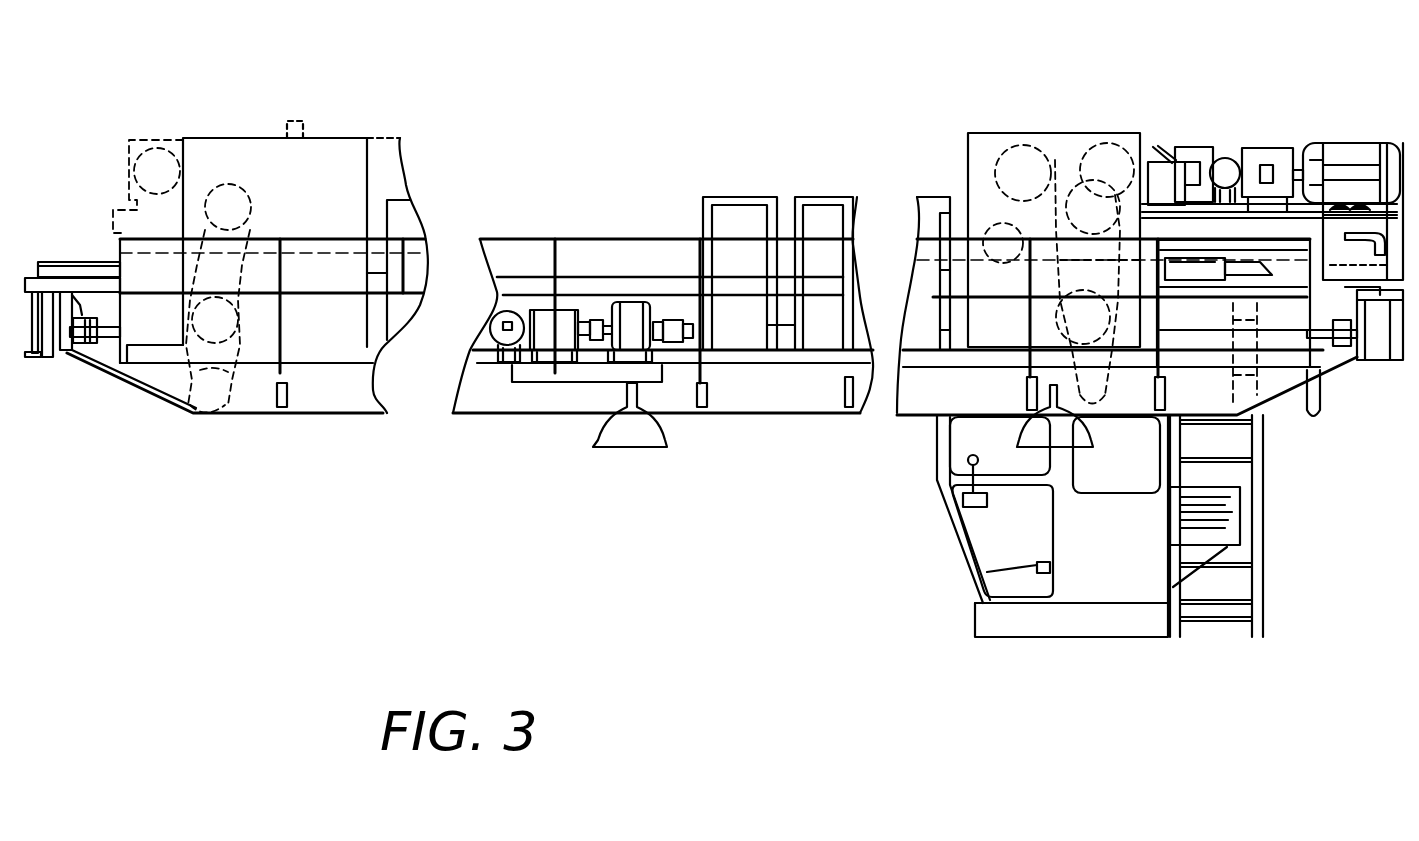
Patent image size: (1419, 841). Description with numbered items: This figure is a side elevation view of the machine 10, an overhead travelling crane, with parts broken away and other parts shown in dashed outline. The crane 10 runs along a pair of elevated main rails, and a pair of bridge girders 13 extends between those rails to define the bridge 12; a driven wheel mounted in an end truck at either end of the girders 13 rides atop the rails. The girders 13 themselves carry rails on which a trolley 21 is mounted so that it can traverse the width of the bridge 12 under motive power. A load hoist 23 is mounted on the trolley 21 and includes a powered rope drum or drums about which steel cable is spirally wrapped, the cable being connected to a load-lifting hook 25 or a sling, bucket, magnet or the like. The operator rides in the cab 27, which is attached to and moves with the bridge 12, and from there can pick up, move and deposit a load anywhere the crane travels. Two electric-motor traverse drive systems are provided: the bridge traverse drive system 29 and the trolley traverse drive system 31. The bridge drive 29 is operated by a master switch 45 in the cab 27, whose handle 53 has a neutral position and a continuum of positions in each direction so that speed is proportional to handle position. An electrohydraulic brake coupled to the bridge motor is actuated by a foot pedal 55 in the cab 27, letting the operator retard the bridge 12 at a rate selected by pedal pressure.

The overhead travelling crane 10 is at (226, 346).
The bridge 12 is at (663, 314).
The bridge girders 13 is at (792, 403).
The trolley 21 is at (1197, 150).
The load hoist 23 is at (1077, 187).
The load-lifting hook 25 is at (193, 414).
The cab 27 is at (1127, 593).
The bridge traverse drive system 29 is at (596, 318).
The trolley traverse drive system 31 is at (1273, 127).
The master switch 45 is at (973, 508).
The handle 53 is at (968, 458).
The foot pedal 55 is at (990, 573).